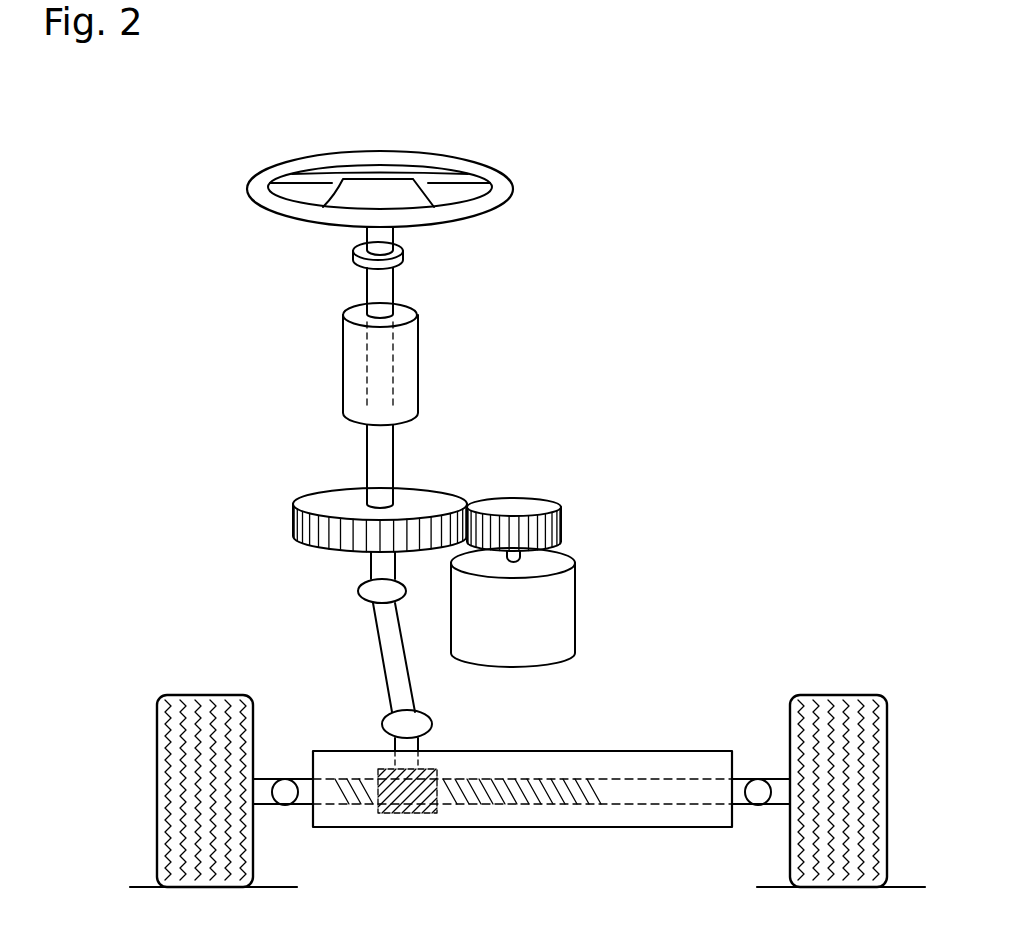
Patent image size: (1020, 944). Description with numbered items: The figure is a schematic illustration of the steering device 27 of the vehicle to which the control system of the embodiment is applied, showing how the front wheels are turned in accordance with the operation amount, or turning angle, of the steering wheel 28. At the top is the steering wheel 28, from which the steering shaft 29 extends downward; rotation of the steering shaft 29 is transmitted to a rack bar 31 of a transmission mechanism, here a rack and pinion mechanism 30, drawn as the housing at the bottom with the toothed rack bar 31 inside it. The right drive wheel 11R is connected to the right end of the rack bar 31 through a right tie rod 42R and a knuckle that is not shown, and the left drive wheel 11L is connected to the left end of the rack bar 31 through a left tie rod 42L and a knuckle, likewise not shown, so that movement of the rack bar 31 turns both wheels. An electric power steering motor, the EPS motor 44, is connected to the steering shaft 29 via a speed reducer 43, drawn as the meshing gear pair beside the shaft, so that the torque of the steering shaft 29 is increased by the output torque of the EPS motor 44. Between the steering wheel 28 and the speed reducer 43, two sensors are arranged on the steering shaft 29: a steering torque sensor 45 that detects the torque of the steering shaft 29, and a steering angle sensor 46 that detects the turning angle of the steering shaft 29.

The steering device 27 is at (637, 163).
The steering wheel 28 is at (425, 152).
The steering shaft 29 is at (367, 456).
The rack and pinion mechanism 30 is at (522, 831).
The rack bar 31 is at (616, 808).
The left tie rod 42L is at (265, 806).
The right tie rod 42R is at (765, 806).
The speed reducer 43 is at (481, 467).
The EPS motor 44 is at (518, 668).
The steering torque sensor 45 is at (343, 355).
The steering angle sensor 46 is at (353, 256).
The left drive wheel 11L is at (157, 762).
The right drive wheel 11R is at (887, 787).